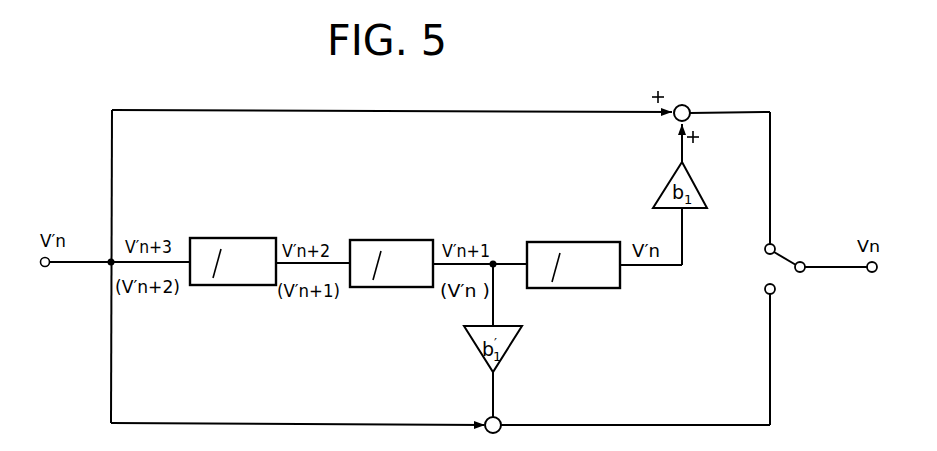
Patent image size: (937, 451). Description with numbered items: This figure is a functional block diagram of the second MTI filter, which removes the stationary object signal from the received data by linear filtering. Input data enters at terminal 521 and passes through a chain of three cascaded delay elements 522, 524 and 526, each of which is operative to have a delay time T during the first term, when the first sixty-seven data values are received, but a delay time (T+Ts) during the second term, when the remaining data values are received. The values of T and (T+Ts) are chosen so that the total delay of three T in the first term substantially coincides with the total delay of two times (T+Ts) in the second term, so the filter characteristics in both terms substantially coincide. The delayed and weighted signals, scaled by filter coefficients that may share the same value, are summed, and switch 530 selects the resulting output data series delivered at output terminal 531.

The input terminal 521 is at (45, 267).
The delay element 522 is at (248, 238).
The delay element 524 is at (397, 240).
The delay element 526 is at (572, 242).
The switch 530 is at (788, 258).
The output terminal 531 is at (868, 275).